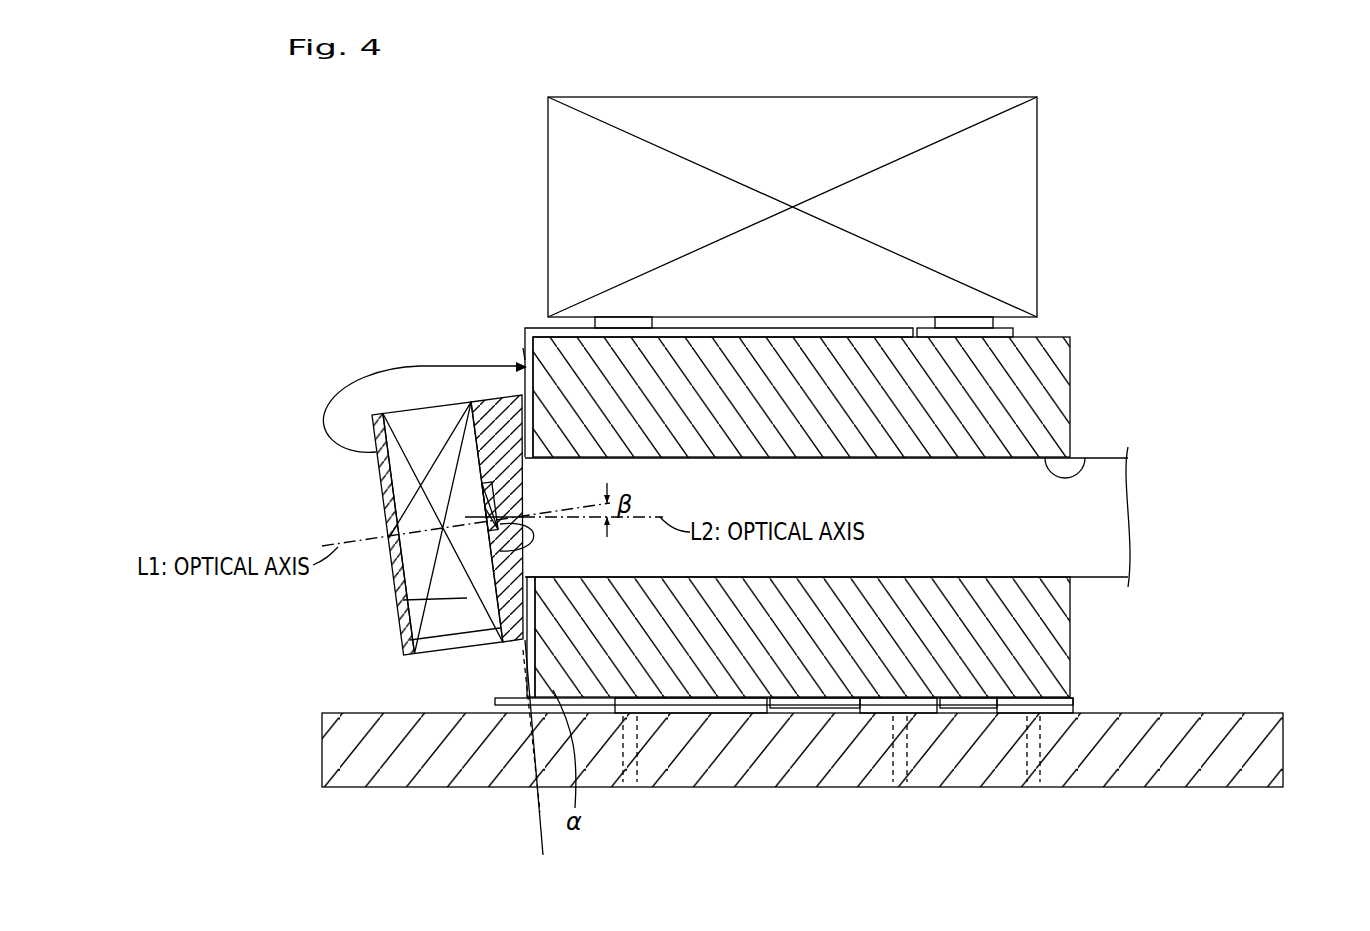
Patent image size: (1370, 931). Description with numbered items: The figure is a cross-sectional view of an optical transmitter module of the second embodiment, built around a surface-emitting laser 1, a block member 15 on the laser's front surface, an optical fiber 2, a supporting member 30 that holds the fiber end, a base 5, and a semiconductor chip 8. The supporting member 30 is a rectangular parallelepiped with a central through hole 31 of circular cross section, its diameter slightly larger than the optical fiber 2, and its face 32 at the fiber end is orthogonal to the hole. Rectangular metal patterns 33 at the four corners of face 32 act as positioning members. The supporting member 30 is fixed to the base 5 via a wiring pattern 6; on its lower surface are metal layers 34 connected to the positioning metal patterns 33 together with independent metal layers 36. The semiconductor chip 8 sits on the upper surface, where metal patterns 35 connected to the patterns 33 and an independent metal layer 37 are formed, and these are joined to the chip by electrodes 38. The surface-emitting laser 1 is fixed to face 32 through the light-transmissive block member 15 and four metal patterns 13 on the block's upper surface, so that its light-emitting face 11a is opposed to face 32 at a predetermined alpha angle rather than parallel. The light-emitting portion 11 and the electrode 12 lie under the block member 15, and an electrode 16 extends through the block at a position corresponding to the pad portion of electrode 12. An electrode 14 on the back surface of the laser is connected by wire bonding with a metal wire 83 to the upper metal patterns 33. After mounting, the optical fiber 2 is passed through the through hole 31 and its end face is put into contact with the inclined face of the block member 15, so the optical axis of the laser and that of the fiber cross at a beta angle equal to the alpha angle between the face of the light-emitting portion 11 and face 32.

The surface-emitting laser 1 is at (310, 458).
The optical fiber 2 is at (1130, 496).
The base 5 is at (1178, 718).
The wiring pattern 6 is at (727, 710).
The semiconductor chip 8 is at (1015, 174).
The light-emitting portion 11 is at (488, 500).
The light-emitting face 11a is at (493, 551).
The electrode 12 is at (403, 600).
The metal patterns 13 is at (523, 397).
The electrode 14 is at (380, 485).
The block member 15 is at (497, 430).
The electrode 16 is at (410, 640).
The supporting member 30 is at (1055, 376).
The through hole 31 is at (1088, 457).
The face 32 is at (523, 348).
The metal patterns 33 is at (527, 336).
The metal layers 34 is at (613, 704).
The metal patterns 35 is at (547, 329).
The metal layers 36 is at (870, 710).
The metal layer 37 is at (1010, 330).
The electrodes 38 is at (622, 318).
The metal wire 83 is at (357, 378).